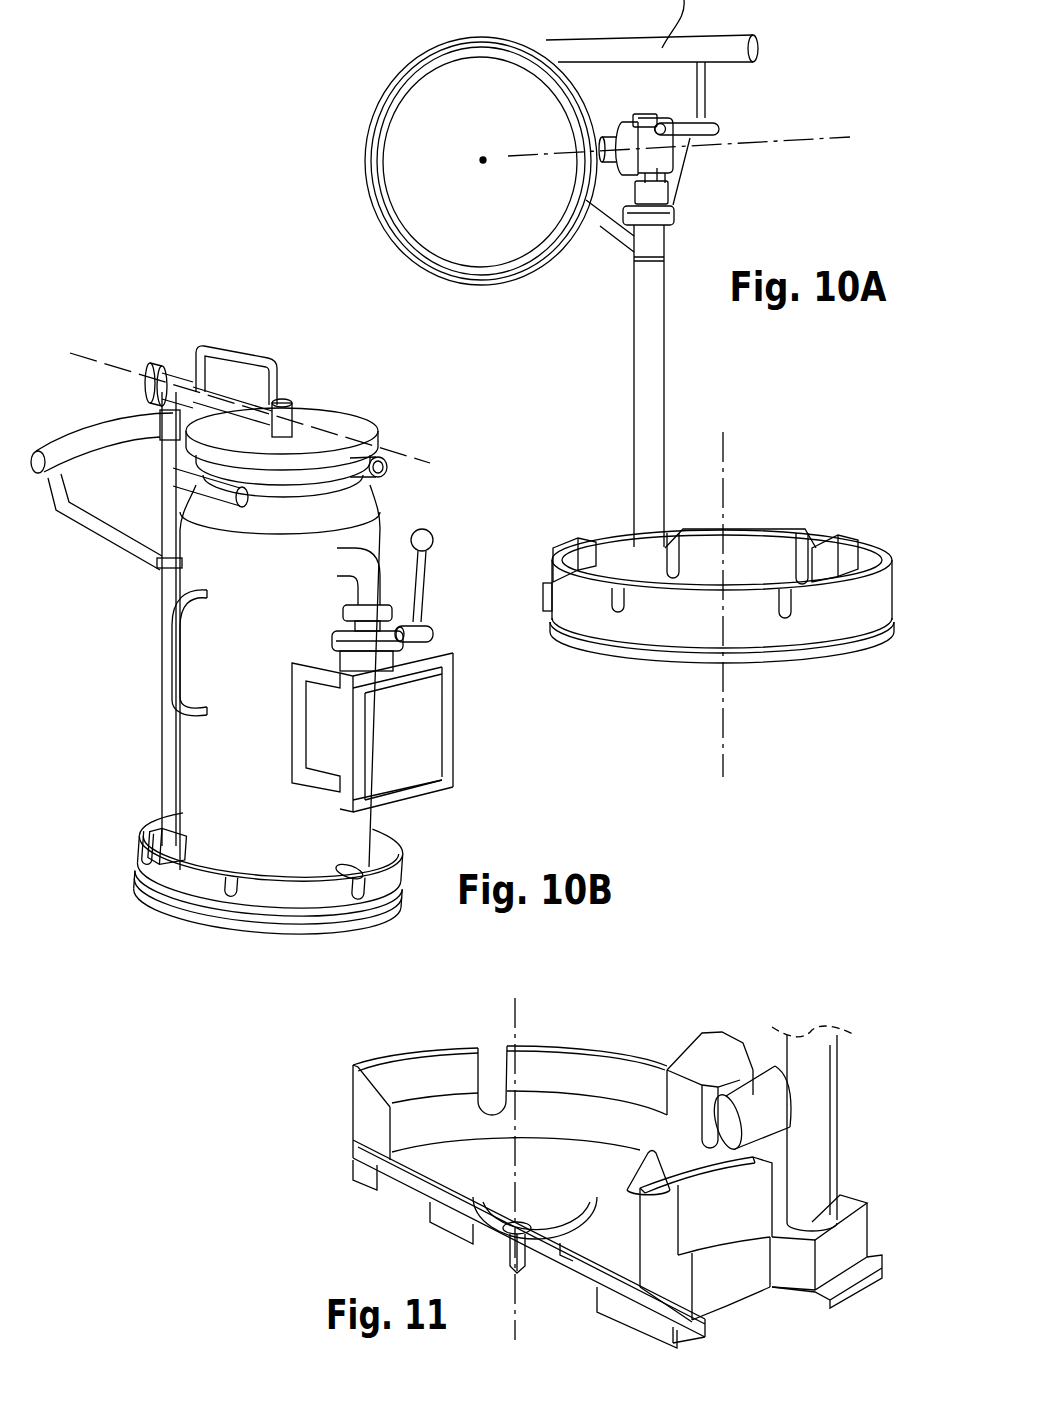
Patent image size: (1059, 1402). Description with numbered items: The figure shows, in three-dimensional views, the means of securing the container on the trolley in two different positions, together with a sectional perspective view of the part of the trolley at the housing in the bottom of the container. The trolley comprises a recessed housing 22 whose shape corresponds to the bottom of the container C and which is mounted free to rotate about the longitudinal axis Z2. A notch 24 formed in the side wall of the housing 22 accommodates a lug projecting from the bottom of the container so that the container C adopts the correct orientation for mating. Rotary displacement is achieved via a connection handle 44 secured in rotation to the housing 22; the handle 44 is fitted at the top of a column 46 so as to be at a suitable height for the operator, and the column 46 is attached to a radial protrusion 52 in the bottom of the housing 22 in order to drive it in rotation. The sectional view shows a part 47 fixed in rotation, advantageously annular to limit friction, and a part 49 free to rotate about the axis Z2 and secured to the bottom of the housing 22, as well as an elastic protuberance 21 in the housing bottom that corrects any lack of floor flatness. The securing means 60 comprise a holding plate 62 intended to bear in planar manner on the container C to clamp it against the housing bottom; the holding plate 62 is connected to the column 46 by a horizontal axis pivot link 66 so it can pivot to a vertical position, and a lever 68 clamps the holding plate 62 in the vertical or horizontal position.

In FIG. 10A, the securing means 60 is at (757, 110).
In FIG. 10B, the securing means 60 is at (305, 378).
In FIG. 10A, the holding plate 62 is at (440, 128).
In FIG. 10B, the holding plate 62 is at (317, 438).
In FIG. 10A, the horizontal axis pivot link 66 is at (812, 137).
In FIG. 10A, the lever 68 is at (723, 130).
In FIG. 10A, the column 46 is at (650, 415).
In FIG. 10B, the column 46 is at (167, 748).
In FIG. 11, the column 46 is at (818, 1135).
In FIG. 10A, the housing 22 is at (770, 505).
In FIG. 10B, the housing 22 is at (423, 845).
In FIG. 11, the housing 22 is at (330, 1097).
In FIG. 10A, the notch 24 is at (790, 607).
In FIG. 10A, the longitudinal axis Z2 is at (725, 450).
In FIG. 11, the longitudinal axis Z2 is at (517, 1018).
In FIG. 10B, the connection handle 44 is at (97, 435).
In FIG. 10B, the container C is at (370, 535).
In FIG. 11, the protuberance 21 is at (652, 1150).
In FIG. 11, the rotating part 49 is at (387, 1176).
In FIG. 11, the fixed part 47 is at (397, 1196).
In FIG. 11, the radial protrusion 52 is at (840, 1295).